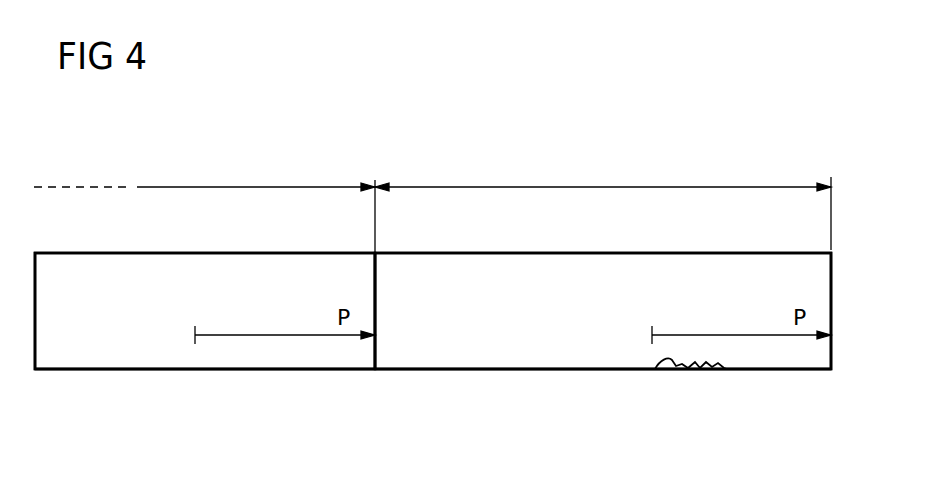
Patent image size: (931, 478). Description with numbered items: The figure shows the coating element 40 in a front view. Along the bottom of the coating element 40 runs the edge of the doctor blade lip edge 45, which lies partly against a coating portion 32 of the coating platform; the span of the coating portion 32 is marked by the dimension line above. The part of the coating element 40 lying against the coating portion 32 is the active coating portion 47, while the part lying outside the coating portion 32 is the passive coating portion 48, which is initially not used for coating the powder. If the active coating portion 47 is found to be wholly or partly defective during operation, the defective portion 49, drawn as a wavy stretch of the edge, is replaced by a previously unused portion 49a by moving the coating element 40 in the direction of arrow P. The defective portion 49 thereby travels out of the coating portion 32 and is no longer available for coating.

The coating portion 32 is at (607, 187).
The coating element 40 is at (300, 265).
The doctor blade lip edge 45 is at (435, 370).
The active coating portion 47 is at (462, 252).
The passive coating portion 48 is at (120, 252).
The defective portion 49 is at (673, 357).
The previously unused portion 49a is at (230, 357).